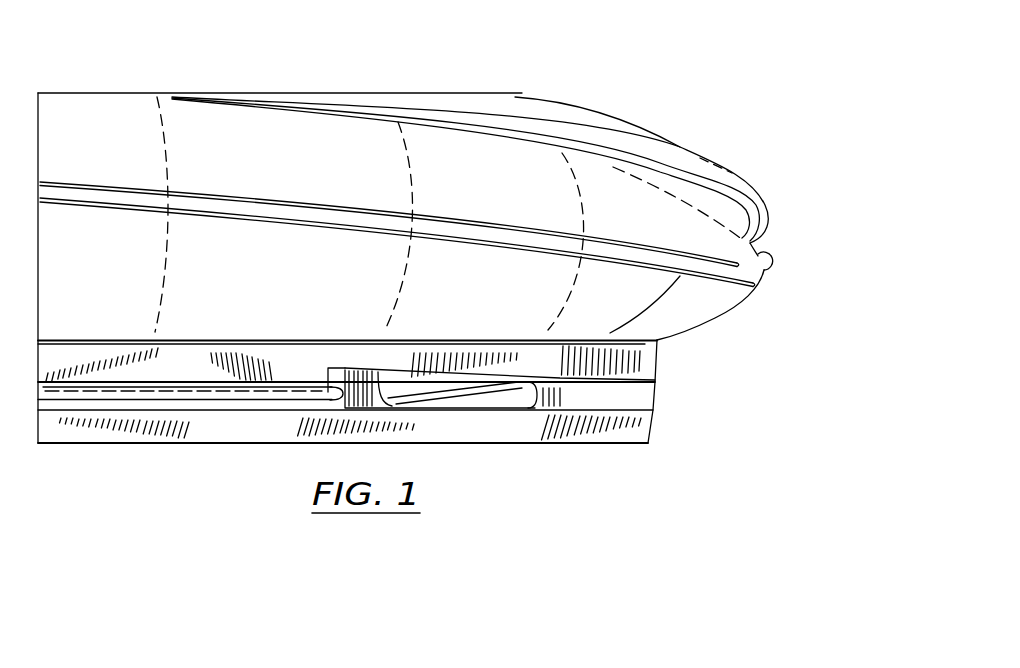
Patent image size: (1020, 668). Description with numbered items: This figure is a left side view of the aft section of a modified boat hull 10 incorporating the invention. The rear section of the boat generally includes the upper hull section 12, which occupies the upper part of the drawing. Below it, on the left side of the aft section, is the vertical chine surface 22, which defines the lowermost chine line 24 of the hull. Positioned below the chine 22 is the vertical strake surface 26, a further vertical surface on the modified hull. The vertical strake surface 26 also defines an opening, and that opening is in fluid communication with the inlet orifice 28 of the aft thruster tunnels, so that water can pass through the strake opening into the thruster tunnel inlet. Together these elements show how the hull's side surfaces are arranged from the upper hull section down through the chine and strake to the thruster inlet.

The modified boat hull 10 is at (666, 71).
The upper hull section 12 is at (685, 308).
The vertical chine surface 22 is at (298, 363).
The lowermost chine line 24 is at (202, 383).
The vertical strake surface 26 is at (643, 397).
The inlet orifice 28 is at (480, 398).